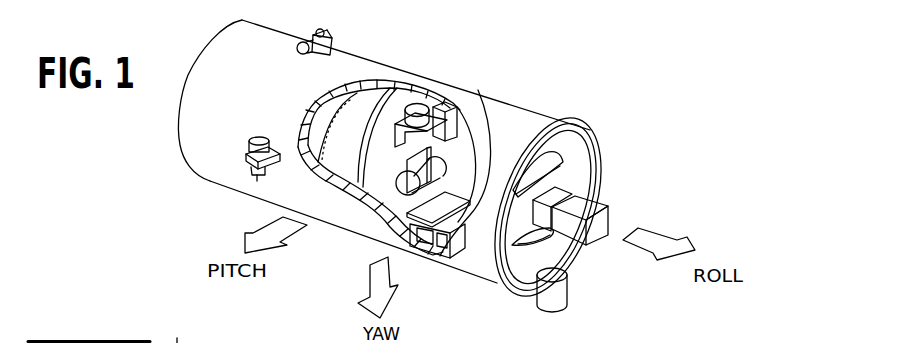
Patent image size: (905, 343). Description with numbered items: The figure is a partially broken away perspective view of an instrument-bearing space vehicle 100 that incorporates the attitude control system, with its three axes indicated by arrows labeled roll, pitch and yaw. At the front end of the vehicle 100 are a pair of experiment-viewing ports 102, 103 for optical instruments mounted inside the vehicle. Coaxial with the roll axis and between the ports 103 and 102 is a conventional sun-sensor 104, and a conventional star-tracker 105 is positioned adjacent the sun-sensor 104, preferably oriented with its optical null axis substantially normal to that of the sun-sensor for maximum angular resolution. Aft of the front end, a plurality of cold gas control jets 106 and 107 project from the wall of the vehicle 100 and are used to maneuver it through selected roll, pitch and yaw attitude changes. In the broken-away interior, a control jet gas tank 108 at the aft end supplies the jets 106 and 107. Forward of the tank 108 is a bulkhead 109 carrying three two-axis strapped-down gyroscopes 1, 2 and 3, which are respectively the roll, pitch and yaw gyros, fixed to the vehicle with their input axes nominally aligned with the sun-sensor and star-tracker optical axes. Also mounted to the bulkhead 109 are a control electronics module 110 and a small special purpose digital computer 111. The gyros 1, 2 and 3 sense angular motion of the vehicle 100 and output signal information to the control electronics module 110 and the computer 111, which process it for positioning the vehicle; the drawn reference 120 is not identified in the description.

The instrument-bearing space vehicle 100 is at (432, 24).
The roll gyroscope 1 is at (402, 189).
The pitch gyroscope 2 is at (405, 118).
The yaw gyroscope 3 is at (438, 167).
The experiment-viewing port 102 is at (553, 167).
The experiment-viewing port 103 is at (528, 248).
The sun-sensor 104 is at (608, 214).
The star-tracker 105 is at (567, 300).
The cold gas control jet 106 is at (323, 40).
The cold gas control jet 107 is at (255, 178).
The control jet gas tank 108 is at (355, 95).
The bulkhead 109 is at (417, 104).
The control electronics module 110 is at (478, 91).
The digital computer 111 is at (447, 250).
The reference axis line 120 is at (116, 332).